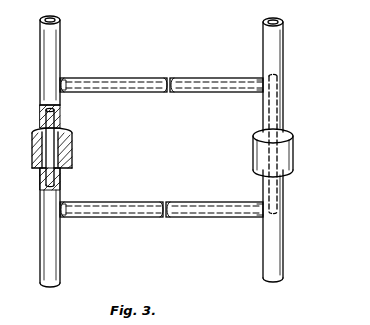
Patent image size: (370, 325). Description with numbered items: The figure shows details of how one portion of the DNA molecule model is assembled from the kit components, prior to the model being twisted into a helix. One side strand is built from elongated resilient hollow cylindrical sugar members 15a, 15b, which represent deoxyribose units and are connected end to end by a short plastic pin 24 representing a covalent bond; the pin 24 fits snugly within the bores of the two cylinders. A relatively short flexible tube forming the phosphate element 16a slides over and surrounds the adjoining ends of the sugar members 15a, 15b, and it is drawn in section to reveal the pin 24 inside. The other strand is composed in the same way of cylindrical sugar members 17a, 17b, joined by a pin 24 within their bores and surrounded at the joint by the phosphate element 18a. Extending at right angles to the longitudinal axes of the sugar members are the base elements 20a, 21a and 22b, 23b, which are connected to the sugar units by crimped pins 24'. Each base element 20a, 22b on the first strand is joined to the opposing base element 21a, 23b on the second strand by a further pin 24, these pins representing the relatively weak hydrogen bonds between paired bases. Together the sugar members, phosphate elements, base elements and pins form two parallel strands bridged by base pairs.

The hollow cylindrical sugar member 15a is at (48, 45).
The hollow cylindrical sugar member 15b is at (55, 266).
The phosphate element 16a is at (70, 156).
The cylindrical sugar member 17a is at (268, 75).
The cylindrical sugar member 17b is at (278, 243).
The phosphate element 18a is at (292, 156).
The base element 20a is at (150, 93).
The base element 21a is at (200, 93).
The base element 22b is at (150, 218).
The base element 23b is at (222, 218).
The pin 24 is at (161, 134).
The crimped pin 24' is at (161, 135).